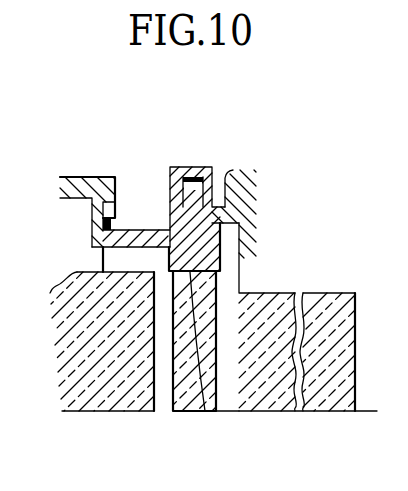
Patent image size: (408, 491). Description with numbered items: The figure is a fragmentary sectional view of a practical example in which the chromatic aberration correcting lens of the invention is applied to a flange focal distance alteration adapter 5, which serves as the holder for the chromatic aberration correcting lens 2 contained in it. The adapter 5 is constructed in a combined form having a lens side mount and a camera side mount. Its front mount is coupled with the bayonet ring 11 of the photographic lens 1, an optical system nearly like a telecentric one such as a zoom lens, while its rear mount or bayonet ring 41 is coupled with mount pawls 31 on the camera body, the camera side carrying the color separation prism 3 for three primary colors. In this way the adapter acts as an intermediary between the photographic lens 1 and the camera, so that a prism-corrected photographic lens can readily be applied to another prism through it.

The photographic lens 1 is at (108, 390).
The chromatic aberration correcting lens 2 is at (193, 395).
The color separation prism 3 is at (270, 395).
The flange focal distance alteration adapter 5 is at (140, 236).
The bayonet ring 11 is at (98, 177).
The mount pawls 31 is at (199, 193).
The bayonet ring 41 is at (193, 168).